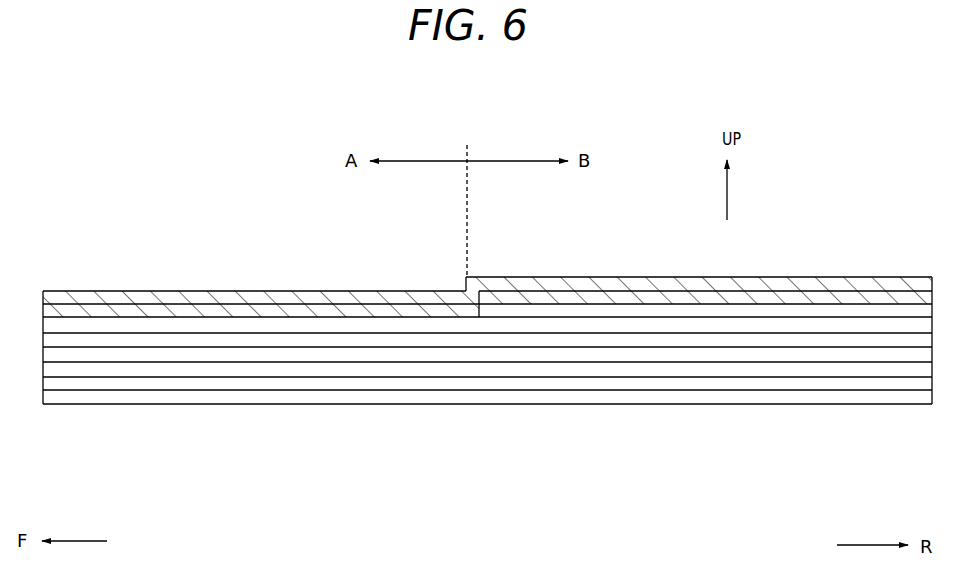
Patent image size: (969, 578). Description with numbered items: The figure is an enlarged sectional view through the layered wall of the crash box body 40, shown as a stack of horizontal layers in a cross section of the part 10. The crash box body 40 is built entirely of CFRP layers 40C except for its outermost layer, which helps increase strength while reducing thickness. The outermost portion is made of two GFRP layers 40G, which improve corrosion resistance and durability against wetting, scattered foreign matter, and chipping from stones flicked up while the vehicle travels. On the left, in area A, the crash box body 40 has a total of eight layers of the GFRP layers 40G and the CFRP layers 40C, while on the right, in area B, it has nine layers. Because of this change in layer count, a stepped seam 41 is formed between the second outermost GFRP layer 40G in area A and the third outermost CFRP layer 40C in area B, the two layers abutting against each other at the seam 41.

The display device 10 is at (183, 231).
The crash box body 40 is at (305, 272).
The GFRP layer 40G is at (100, 298).
The CFRP layer 40C is at (786, 292).
The seam 41 is at (480, 317).